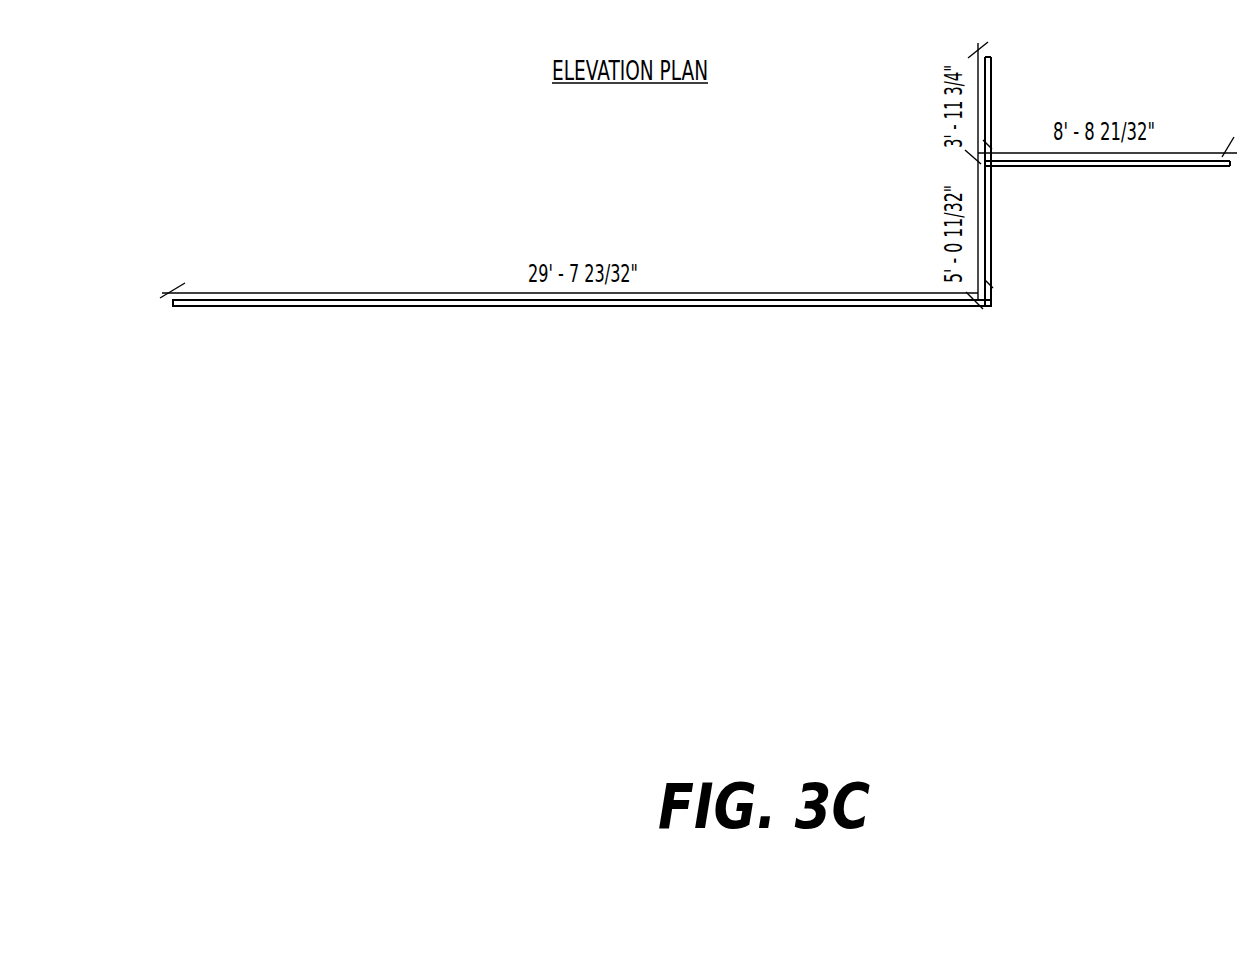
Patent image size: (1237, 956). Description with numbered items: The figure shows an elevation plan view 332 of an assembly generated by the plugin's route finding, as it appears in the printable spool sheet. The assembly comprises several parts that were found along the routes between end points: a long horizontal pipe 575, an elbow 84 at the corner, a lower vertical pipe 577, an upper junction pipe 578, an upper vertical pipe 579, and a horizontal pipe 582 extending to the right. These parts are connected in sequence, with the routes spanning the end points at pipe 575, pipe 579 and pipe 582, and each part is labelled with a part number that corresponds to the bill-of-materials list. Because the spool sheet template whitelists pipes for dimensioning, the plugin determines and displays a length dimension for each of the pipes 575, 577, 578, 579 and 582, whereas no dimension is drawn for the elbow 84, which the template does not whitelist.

The second view 332 is at (582, 336).
The pipe 575 is at (582, 302).
The lower vertical post segment 577 is at (986, 234).
The pipe 578 is at (989, 166).
The pipe 579 is at (986, 104).
The pipe 582 is at (1126, 166).
The elbow 84 is at (990, 303).